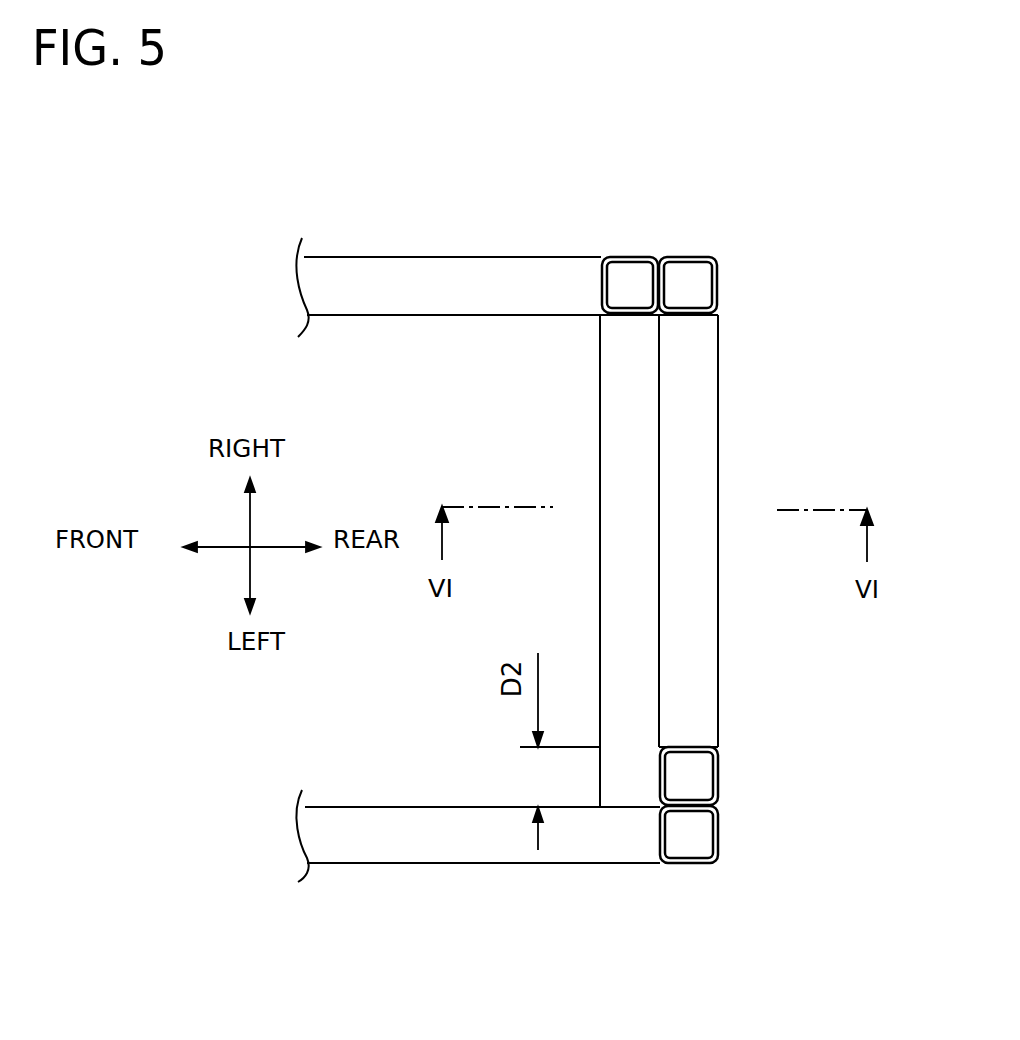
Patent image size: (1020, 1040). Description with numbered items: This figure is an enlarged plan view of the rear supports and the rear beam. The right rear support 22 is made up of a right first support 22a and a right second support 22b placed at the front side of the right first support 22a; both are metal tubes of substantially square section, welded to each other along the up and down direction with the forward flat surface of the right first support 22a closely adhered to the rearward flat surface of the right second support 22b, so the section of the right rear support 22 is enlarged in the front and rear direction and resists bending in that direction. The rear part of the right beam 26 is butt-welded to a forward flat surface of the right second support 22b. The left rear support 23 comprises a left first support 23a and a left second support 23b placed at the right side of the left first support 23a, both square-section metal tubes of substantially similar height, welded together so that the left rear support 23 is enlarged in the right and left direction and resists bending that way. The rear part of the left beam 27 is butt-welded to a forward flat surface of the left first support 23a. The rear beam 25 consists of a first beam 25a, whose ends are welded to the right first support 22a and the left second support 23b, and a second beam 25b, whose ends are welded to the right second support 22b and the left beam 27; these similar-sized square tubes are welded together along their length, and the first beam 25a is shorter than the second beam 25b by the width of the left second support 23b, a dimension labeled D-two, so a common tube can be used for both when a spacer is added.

The right rear support 22 is at (660, 205).
The right first support 22a is at (698, 238).
The right second support 22b is at (630, 257).
The left rear support 23 is at (788, 803).
The left first support 23a is at (718, 833).
The left second support 23b is at (718, 775).
The rear beam 25 is at (757, 561).
The first beam 25a is at (680, 450).
The second beam 25b is at (633, 378).
The right beam 26 is at (404, 267).
The left beam 27 is at (404, 818).